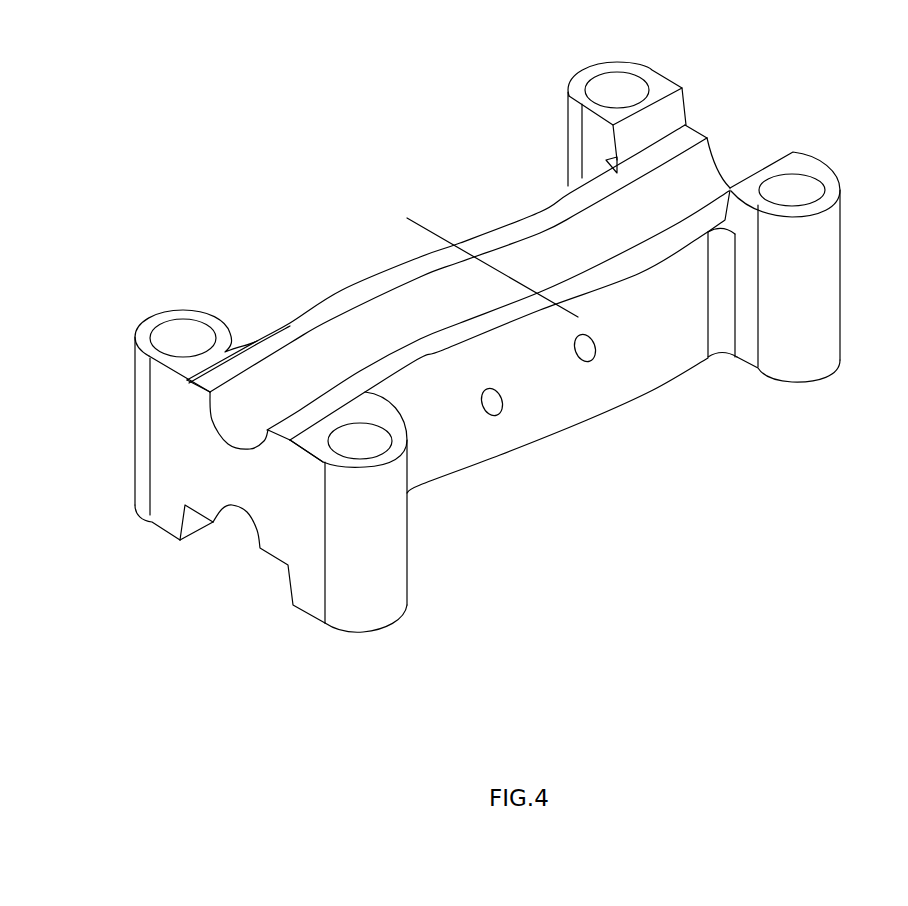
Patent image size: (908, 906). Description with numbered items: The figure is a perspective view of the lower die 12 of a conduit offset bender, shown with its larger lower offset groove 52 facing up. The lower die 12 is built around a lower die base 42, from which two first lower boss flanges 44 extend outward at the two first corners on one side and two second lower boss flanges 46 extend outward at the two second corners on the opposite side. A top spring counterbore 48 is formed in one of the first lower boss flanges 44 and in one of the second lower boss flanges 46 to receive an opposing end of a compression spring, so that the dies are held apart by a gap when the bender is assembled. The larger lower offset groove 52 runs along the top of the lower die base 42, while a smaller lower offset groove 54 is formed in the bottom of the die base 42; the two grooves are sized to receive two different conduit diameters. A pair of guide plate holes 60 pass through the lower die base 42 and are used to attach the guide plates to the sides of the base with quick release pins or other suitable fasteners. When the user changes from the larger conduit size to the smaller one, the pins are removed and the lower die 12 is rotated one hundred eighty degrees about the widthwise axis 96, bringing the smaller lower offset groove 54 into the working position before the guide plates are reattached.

The lower die 12 is at (780, 91).
The lower die base 42 is at (662, 327).
The first lower boss flanges 44 is at (808, 314).
The second lower boss flanges 46 is at (152, 317).
The top spring counterbore 48 is at (603, 88).
The larger lower offset groove 52 is at (377, 328).
The smaller lower offset groove 54 is at (218, 548).
The guide plate holes 60 is at (585, 356).
The widthwise axis 96 is at (421, 225).